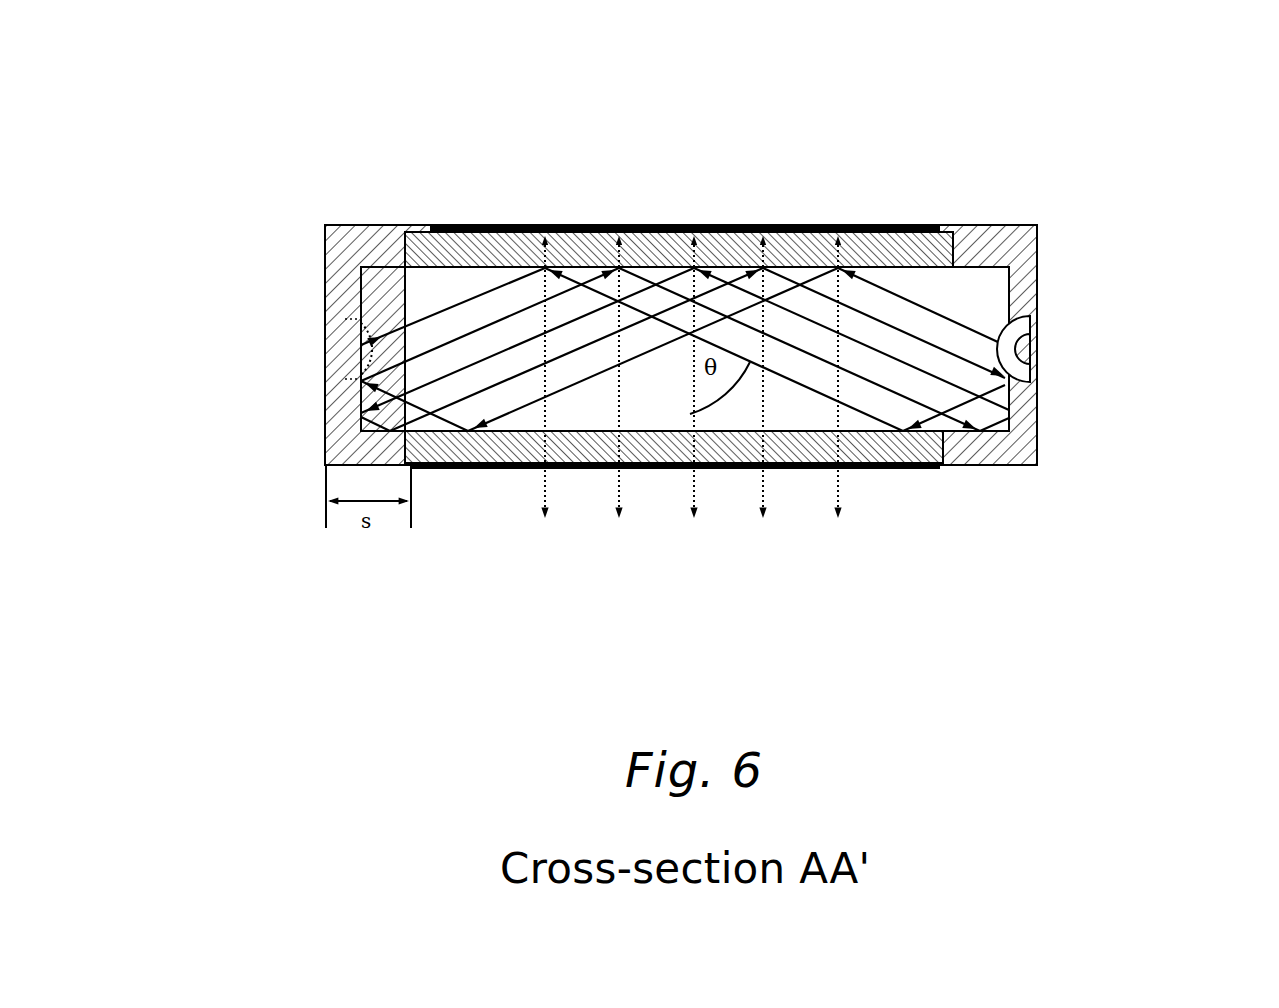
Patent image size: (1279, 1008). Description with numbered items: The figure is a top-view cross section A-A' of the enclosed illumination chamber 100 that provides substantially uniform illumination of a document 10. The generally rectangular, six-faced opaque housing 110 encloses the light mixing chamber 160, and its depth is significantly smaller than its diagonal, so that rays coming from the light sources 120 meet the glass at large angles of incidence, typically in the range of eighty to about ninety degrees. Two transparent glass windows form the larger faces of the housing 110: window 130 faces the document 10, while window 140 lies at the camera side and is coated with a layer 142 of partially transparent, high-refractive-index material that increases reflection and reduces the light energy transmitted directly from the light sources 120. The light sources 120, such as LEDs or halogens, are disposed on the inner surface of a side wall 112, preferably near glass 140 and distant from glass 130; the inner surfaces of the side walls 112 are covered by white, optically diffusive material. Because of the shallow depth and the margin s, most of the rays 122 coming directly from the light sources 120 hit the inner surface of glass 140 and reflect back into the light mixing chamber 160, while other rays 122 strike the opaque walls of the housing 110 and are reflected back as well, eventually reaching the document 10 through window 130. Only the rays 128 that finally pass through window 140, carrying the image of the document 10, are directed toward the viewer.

The illumination chamber 100 is at (677, 329).
The document 10 is at (653, 226).
The housing 110 is at (1037, 445).
The side wall 112 is at (360, 292).
The light source 120 is at (360, 327).
The rays 122 is at (962, 320).
The rays 128 is at (620, 497).
The transparent window 130 is at (477, 265).
The transparent window 140 is at (487, 450).
The layer 142 is at (883, 468).
The light mixing chamber 160 is at (968, 290).